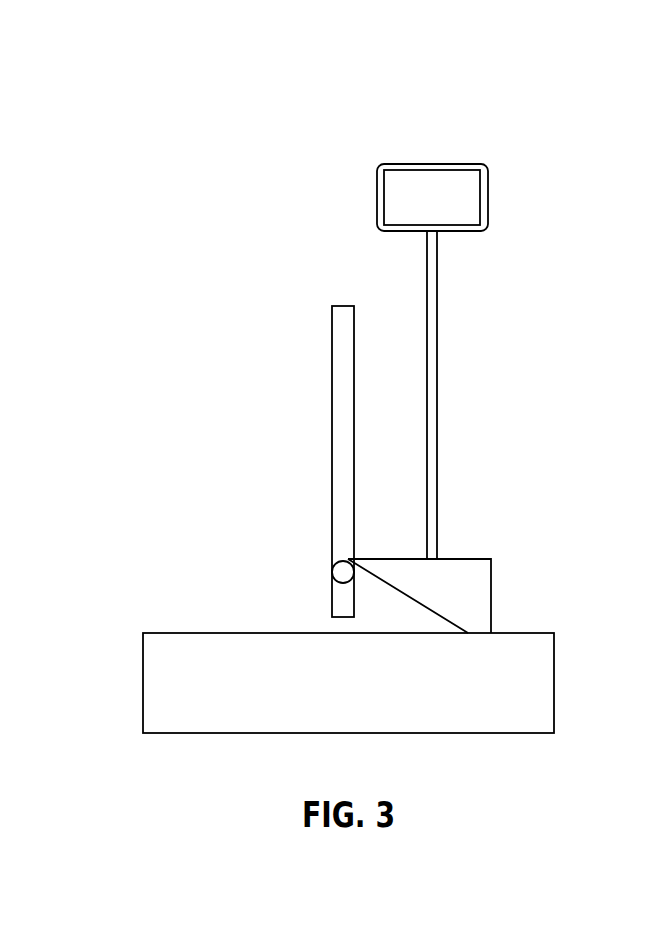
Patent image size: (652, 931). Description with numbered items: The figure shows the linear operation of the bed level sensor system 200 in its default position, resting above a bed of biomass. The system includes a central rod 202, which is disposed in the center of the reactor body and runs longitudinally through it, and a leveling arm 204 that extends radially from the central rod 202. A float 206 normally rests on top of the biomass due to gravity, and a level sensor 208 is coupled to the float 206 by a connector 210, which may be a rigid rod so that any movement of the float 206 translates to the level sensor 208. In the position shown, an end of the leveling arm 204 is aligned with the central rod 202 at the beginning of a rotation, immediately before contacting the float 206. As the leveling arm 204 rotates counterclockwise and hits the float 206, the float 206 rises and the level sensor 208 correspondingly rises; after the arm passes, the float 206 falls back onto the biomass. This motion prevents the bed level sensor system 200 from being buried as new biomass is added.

The bed level sensor system 200 is at (230, 152).
The central rod 202 is at (331, 360).
The leveling arm 204 is at (336, 570).
The float 206 is at (492, 557).
The level sensor 208 is at (432, 180).
The connector 210 is at (432, 306).